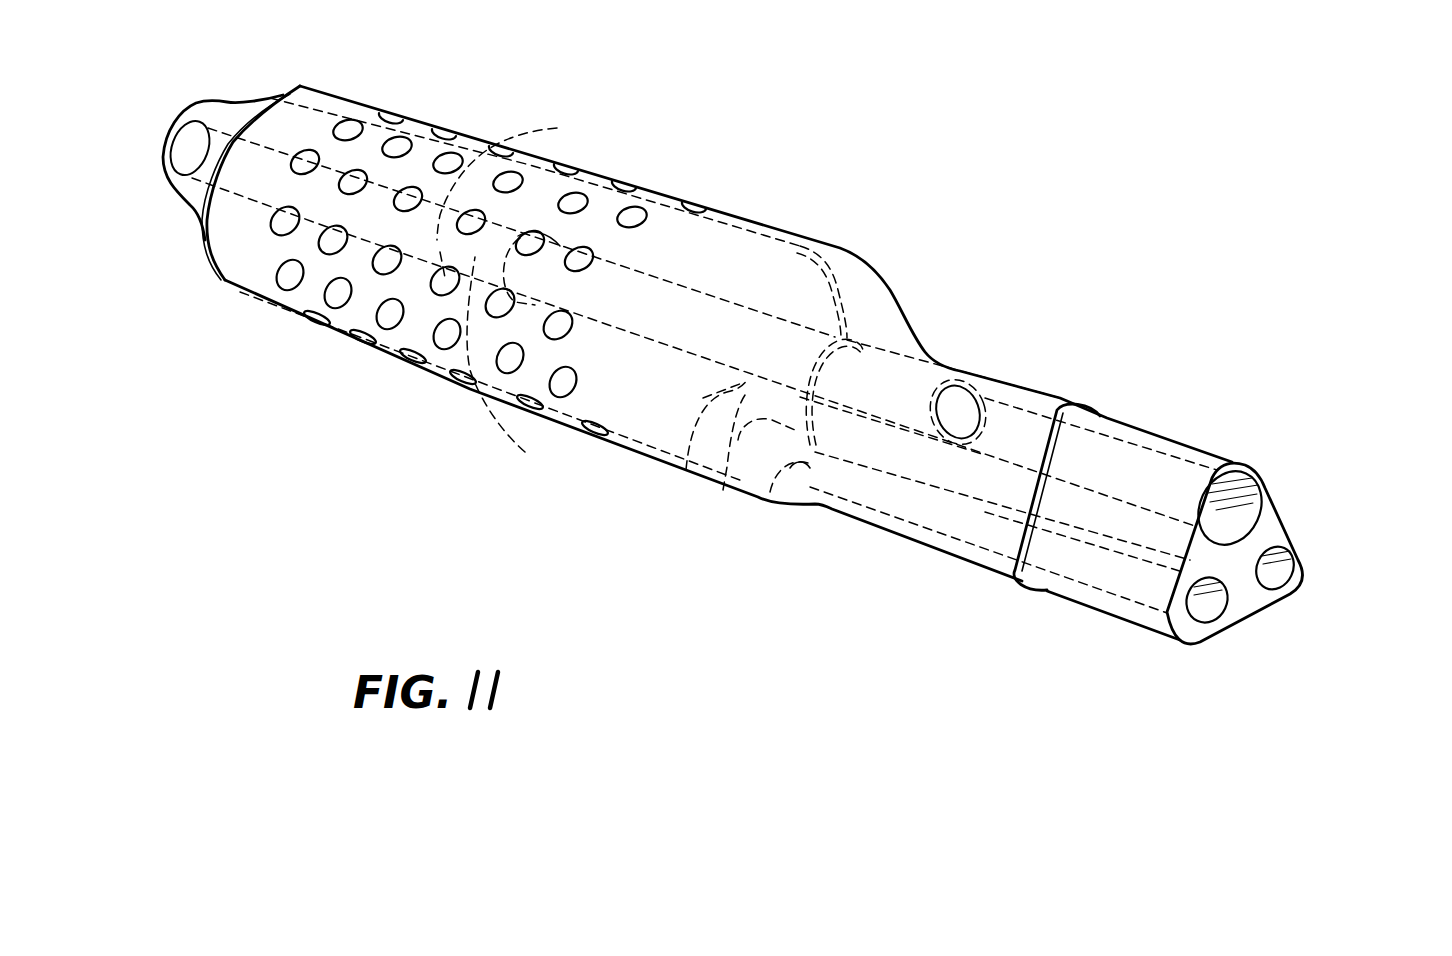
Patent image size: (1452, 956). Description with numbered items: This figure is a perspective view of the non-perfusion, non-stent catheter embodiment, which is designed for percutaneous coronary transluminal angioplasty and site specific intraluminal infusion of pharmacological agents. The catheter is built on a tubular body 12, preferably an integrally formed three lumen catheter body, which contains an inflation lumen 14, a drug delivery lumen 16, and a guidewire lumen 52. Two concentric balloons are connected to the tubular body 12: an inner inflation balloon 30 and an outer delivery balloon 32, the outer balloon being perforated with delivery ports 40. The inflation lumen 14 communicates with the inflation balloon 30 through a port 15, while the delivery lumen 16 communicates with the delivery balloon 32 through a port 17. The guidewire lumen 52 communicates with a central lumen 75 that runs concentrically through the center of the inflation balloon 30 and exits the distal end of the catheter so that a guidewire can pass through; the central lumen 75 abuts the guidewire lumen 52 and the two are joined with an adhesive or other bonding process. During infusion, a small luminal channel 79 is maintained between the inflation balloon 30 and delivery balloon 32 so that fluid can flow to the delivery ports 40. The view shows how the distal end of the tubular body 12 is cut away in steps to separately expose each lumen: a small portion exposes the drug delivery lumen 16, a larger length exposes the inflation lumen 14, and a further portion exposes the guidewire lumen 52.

The tubular body 12 is at (1177, 445).
The inflation lumen 14 is at (686, 470).
The port 15 is at (742, 425).
The drug delivery lumen 16 is at (880, 492).
The port 17 is at (768, 492).
The inflation balloon 30 is at (296, 150).
The delivery balloon 32 is at (300, 88).
The delivery ports 40 is at (631, 216).
The guidewire lumen 52 is at (1220, 507).
The central lumen 75 is at (520, 210).
The luminal channel 79 is at (512, 368).